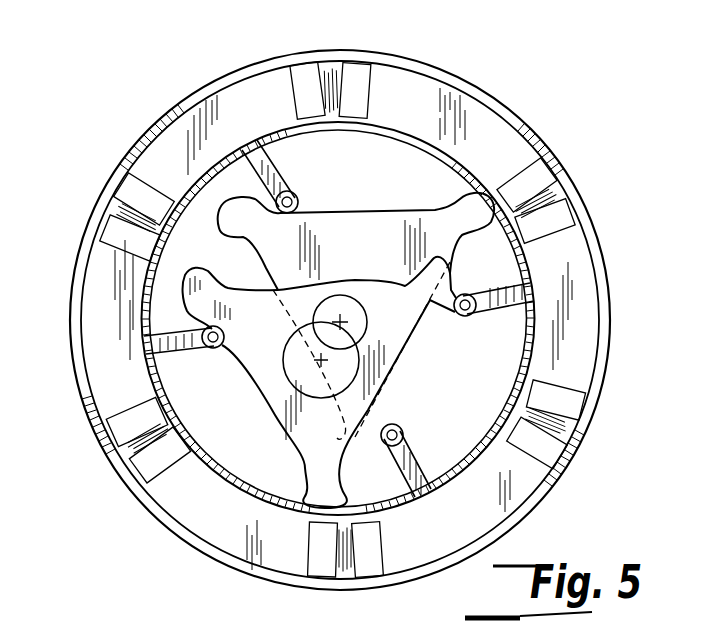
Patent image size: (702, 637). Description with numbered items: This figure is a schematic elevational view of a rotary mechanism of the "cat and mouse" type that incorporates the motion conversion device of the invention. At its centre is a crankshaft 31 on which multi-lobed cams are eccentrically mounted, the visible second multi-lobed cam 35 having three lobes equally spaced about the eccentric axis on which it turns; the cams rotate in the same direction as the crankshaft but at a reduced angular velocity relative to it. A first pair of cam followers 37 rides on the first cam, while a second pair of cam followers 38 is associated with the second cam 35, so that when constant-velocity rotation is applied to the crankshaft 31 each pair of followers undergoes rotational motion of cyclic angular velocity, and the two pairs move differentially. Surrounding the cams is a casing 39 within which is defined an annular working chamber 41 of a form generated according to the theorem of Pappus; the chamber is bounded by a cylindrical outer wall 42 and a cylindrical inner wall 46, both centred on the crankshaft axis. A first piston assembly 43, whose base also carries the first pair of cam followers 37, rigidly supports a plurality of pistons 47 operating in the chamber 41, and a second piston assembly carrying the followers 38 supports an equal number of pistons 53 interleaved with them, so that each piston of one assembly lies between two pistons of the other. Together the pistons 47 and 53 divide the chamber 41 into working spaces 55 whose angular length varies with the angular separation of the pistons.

The crankshaft 31 is at (334, 310).
The second multi-lobed cam 35 is at (347, 208).
The first pair of cam followers 37 is at (210, 351).
The second pair of cam followers 38 is at (294, 190).
The casing 39 is at (612, 270).
The annular working chamber 41 is at (447, 104).
The cylindrical outer wall 42 is at (603, 345).
The first piston assembly 43 is at (247, 510).
The cylindrical inner wall 46 is at (533, 368).
The pistons 47 is at (130, 233).
The pistons 53 is at (136, 192).
The working spaces 55 is at (328, 73).